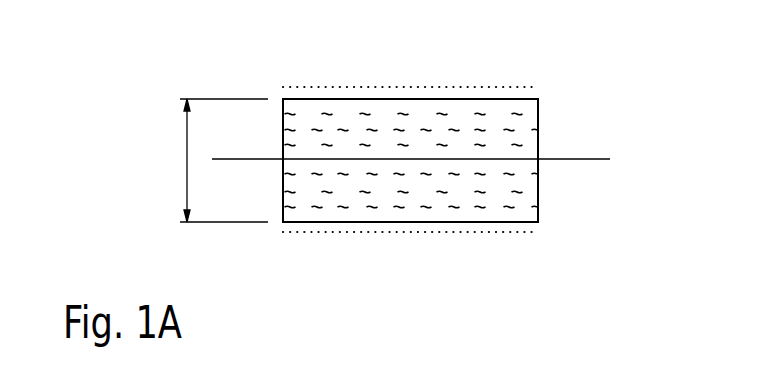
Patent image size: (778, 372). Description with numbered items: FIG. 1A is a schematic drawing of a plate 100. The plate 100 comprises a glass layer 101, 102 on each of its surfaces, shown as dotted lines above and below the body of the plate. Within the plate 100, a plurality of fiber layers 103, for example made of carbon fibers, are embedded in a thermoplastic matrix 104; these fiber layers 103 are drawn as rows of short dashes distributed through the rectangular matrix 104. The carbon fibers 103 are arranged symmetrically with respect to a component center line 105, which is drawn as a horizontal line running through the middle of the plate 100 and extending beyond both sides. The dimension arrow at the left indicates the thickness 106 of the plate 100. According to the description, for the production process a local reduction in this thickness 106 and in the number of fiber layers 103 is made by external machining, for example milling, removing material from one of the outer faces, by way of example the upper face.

The plate 100 is at (423, 161).
The glass layer 101 is at (312, 91).
The glass layer 102 is at (315, 232).
The fiber layers 103 is at (508, 175).
The thermoplastic matrix 104 is at (384, 98).
The component center line 105 is at (581, 160).
The thickness 106 is at (187, 157).